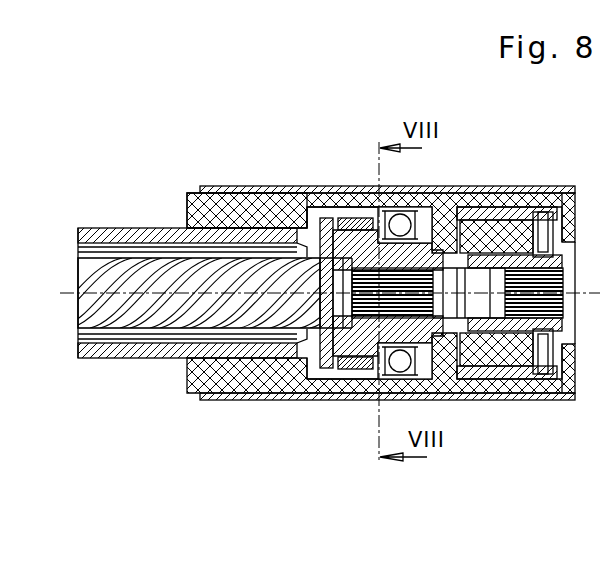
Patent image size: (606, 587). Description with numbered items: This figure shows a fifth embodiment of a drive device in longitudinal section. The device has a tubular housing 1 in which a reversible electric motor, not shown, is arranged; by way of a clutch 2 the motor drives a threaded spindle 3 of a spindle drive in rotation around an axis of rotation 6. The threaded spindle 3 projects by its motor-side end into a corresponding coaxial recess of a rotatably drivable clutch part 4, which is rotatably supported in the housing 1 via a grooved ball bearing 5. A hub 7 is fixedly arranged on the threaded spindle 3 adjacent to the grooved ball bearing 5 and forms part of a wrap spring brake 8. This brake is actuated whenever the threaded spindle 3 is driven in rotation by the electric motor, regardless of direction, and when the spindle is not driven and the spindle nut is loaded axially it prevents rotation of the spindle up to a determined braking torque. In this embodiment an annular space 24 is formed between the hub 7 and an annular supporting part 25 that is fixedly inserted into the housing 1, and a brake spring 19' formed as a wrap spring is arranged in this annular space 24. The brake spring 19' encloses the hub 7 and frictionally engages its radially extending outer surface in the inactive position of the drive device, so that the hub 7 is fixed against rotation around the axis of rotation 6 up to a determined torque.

The tubular housing 1 is at (560, 187).
The clutch 2 is at (513, 187).
The threaded spindle 3 is at (138, 312).
The clutch part 4 is at (458, 213).
The grooved ball bearing 5 is at (433, 398).
The axis of rotation 6 is at (162, 292).
The hub 7 is at (275, 395).
The wrap spring brake 8 is at (360, 392).
The brake spring 19' is at (316, 451).
The annular space 24 is at (280, 187).
The annular supporting part 25 is at (326, 200).